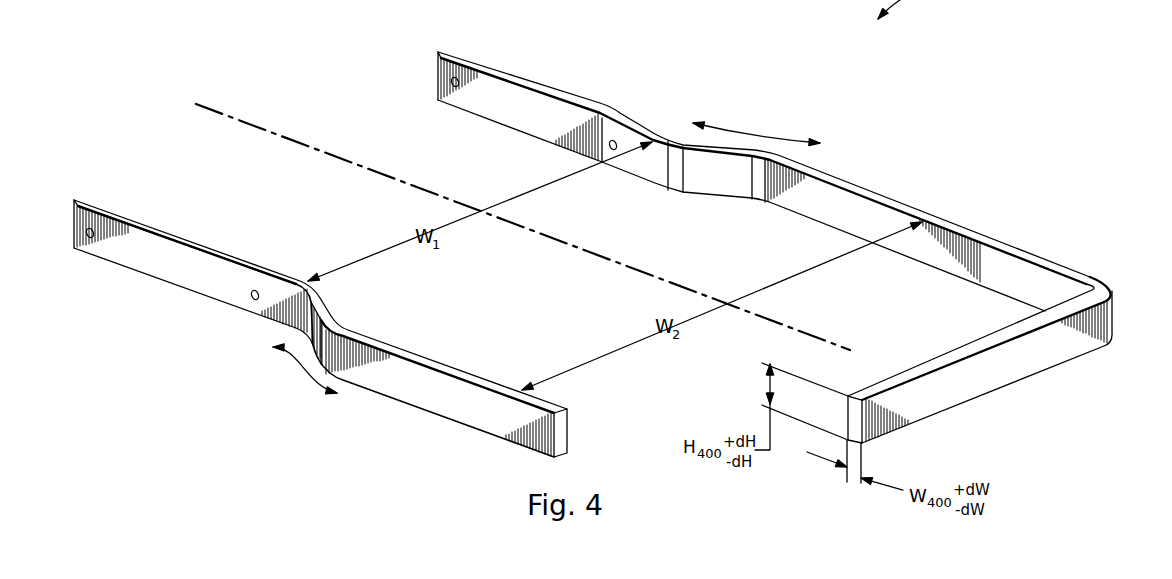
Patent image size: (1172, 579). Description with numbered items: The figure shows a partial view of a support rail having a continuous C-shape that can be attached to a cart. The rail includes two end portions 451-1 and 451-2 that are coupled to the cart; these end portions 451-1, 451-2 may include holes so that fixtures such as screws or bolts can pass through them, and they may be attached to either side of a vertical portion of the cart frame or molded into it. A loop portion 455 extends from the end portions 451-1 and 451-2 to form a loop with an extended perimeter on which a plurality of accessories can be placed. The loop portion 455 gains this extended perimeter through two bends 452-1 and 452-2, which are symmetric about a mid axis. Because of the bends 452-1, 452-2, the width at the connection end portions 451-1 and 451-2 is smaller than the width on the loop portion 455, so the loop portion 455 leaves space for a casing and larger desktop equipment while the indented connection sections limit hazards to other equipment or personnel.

The end portion 451-1 is at (525, 103).
The end portion 451-2 is at (173, 278).
The bend 452-1 is at (752, 131).
The bend 452-2 is at (302, 372).
The loop portion 455 is at (1010, 267).